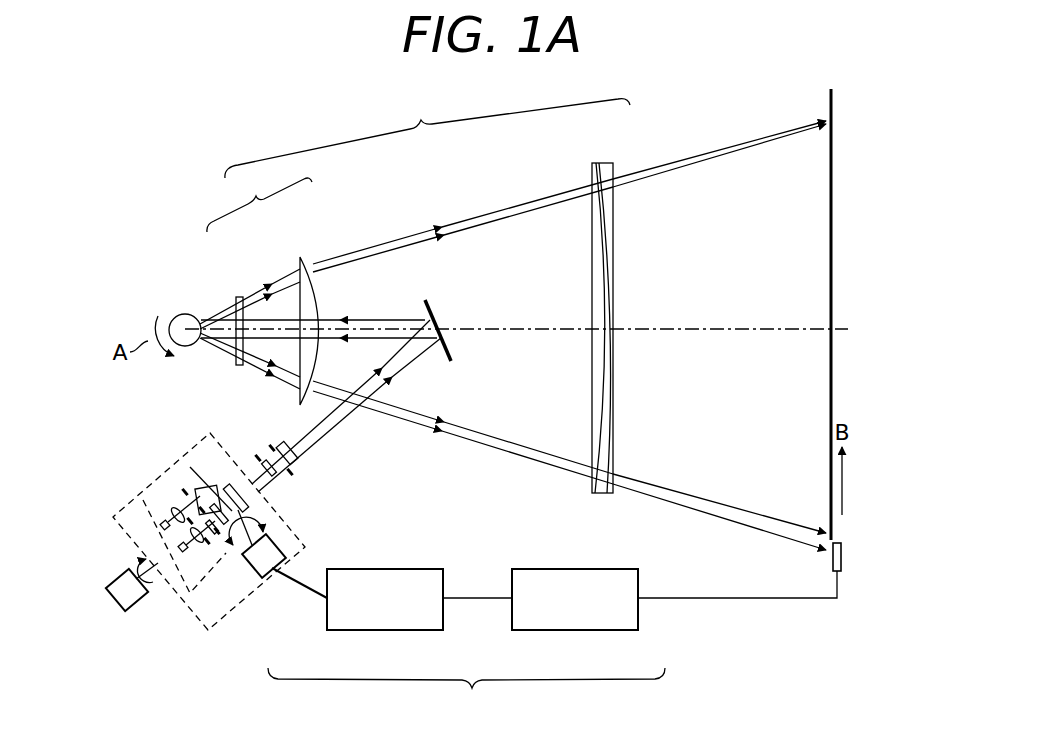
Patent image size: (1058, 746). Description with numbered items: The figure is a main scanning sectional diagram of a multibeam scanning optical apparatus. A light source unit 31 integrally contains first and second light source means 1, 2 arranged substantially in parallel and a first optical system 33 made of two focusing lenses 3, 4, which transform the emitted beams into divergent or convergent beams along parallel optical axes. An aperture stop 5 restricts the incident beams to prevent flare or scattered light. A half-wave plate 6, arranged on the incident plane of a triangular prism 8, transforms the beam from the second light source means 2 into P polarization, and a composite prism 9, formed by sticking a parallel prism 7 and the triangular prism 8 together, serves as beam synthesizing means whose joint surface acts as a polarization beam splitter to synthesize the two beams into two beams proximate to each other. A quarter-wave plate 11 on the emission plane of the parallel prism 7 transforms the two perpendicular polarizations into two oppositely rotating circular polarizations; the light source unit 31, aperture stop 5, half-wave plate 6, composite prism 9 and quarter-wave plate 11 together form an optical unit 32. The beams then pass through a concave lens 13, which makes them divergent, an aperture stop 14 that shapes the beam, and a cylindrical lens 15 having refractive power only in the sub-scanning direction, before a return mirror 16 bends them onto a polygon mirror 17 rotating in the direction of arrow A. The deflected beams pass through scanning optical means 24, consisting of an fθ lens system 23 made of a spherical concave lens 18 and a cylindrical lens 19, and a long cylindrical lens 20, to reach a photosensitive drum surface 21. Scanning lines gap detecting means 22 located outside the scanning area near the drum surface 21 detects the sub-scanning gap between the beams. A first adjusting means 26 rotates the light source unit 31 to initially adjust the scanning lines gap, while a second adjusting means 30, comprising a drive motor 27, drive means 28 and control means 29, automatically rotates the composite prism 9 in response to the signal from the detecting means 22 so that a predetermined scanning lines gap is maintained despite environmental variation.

The first light source means 1 is at (163, 525).
The second light source means 2 is at (183, 553).
The focusing lens 3 is at (175, 515).
The focusing lens 4 is at (197, 541).
The aperture stop 5 is at (192, 488).
The half-wave plate 6 is at (220, 522).
The parallel prism 7 is at (224, 482).
The triangular prism 8 is at (258, 518).
The composite prism 9 is at (212, 485).
The quarter-wave plate 11 is at (242, 505).
The concave lens 13 is at (268, 460).
The aperture stop 14 is at (285, 448).
The cylindrical lens 15 is at (295, 468).
The return mirror 16 is at (430, 301).
The polygon mirror 17 is at (180, 316).
The spherical concave lens 18 is at (238, 295).
The cylindrical lens 19 is at (302, 257).
The long cylindrical lens 20 is at (603, 170).
The photosensitive drum surface 21 is at (829, 100).
The scanning lines gap detecting means 22 is at (838, 572).
The fθ lens system 23 is at (259, 201).
The scanning optical means 24 is at (427, 133).
The first adjusting means 26 is at (135, 612).
The drive motor 27 is at (265, 580).
The drive means 28 is at (430, 632).
The control means 29 is at (613, 632).
The second adjusting means 30 is at (466, 693).
The light source unit 31 is at (140, 505).
The optical unit 32 is at (115, 505).
The first optical system 33 is at (183, 490).